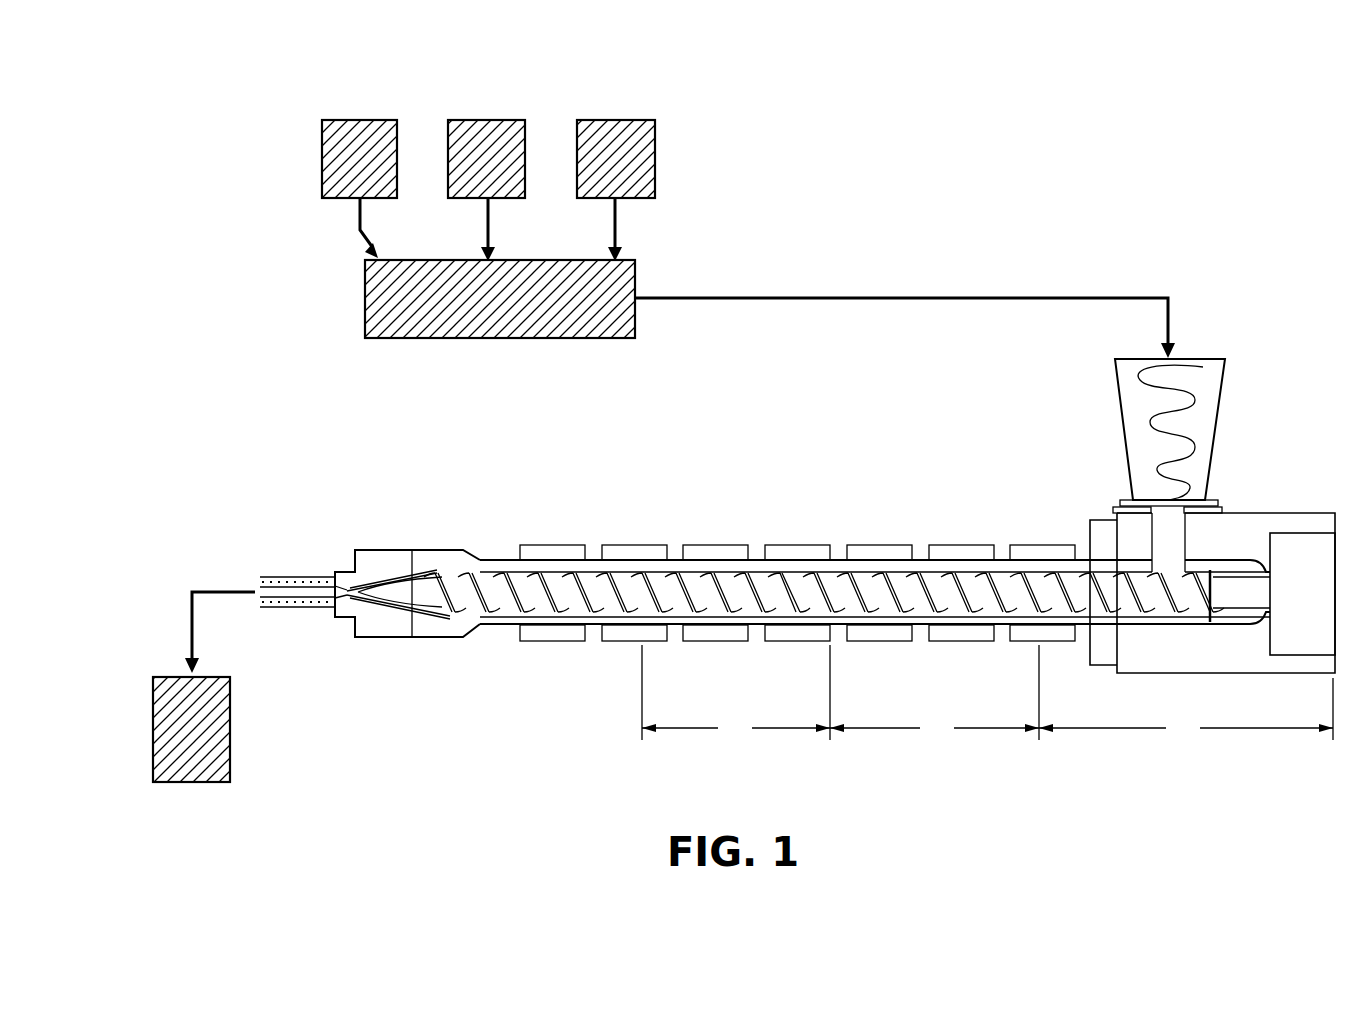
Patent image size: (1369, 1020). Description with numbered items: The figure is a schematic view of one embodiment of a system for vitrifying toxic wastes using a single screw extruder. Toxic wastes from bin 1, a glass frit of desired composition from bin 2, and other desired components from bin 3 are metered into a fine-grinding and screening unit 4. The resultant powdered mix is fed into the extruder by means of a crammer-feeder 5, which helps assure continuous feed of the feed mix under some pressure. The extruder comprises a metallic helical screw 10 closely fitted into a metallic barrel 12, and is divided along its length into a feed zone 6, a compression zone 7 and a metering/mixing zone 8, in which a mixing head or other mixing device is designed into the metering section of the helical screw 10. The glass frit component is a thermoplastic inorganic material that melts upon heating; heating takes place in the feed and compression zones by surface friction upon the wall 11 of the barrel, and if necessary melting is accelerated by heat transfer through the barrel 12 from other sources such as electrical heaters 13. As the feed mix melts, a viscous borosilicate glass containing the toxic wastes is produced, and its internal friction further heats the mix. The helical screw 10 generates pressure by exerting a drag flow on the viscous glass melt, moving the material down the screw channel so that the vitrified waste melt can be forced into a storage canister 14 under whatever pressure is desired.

The bin 1 is at (387, 118).
The bin 2 is at (520, 118).
The bin 3 is at (640, 118).
The fine-grinding and screening unit 4 is at (641, 325).
The crammer-feeder 5 is at (1215, 425).
The feed zone 6 is at (1186, 710).
The compression zone 7 is at (934, 694).
The metering/mixing zone 8 is at (736, 694).
The helical screw 10 is at (477, 597).
The wall 11 is at (913, 577).
The barrel 12 is at (865, 565).
The electrical heaters 13 is at (713, 542).
The storage canister 14 is at (231, 731).